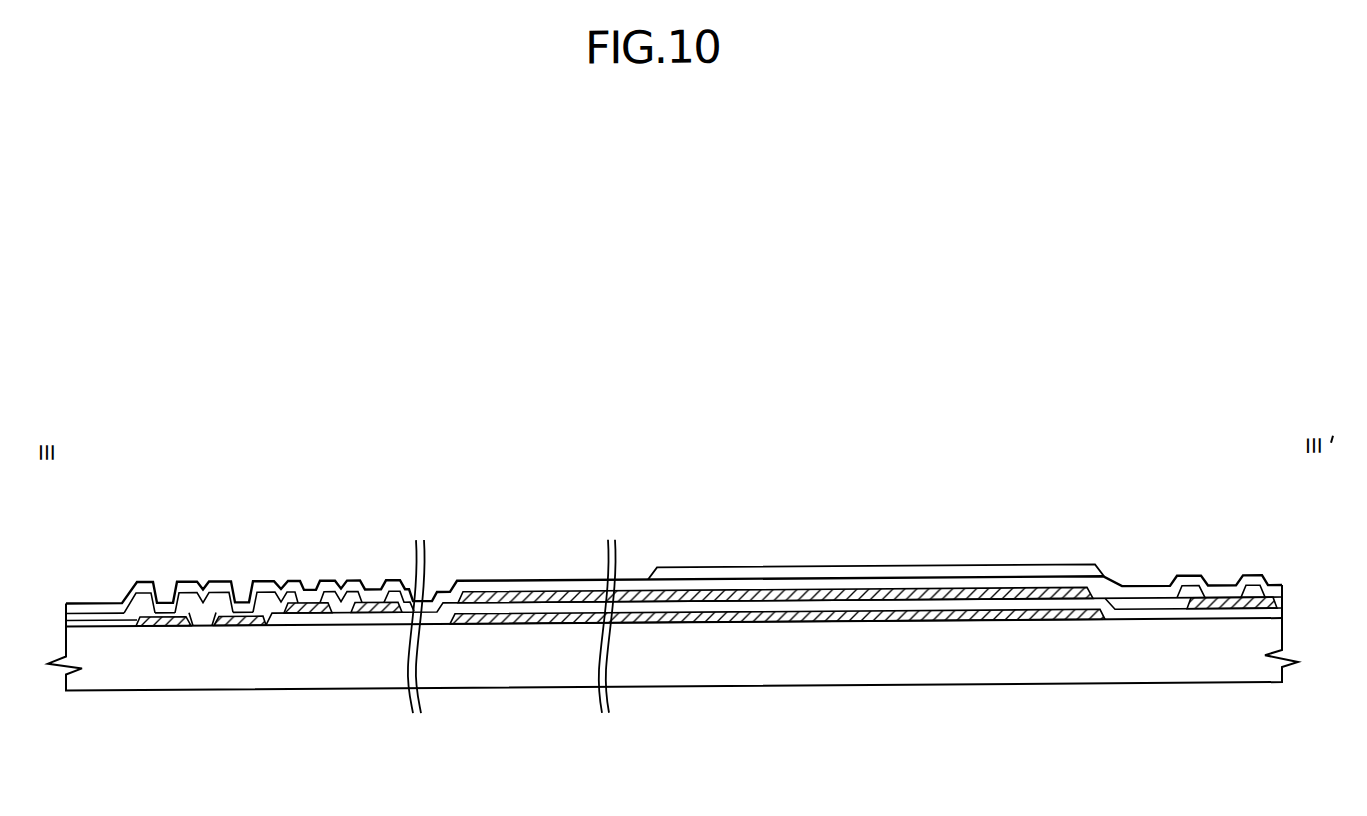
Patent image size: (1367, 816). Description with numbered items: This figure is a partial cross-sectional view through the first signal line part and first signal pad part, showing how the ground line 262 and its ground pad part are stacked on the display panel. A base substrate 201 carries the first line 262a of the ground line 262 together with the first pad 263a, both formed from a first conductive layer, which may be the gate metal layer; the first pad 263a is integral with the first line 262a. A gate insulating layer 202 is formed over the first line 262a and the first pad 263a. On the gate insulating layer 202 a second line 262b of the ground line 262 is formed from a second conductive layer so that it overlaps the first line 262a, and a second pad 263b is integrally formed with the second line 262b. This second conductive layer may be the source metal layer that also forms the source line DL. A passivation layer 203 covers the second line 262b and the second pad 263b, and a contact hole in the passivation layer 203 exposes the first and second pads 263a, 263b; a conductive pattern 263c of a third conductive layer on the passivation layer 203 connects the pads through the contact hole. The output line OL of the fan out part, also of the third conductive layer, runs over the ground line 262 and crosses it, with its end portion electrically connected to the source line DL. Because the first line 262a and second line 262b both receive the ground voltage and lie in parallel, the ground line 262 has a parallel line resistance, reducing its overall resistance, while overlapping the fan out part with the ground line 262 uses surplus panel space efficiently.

The base substrate 201 is at (1280, 649).
The gate insulating layer 202 is at (1280, 621).
The passivation layer 203 is at (1280, 597).
The ground line 262 is at (930, 720).
The first line 262a is at (790, 626).
The second line 262b is at (890, 602).
The first pad 263a is at (167, 628).
The second pad 263b is at (307, 628).
The conductive pattern 263c is at (188, 585).
The output line OL is at (885, 573).
The source line DL is at (1217, 621).